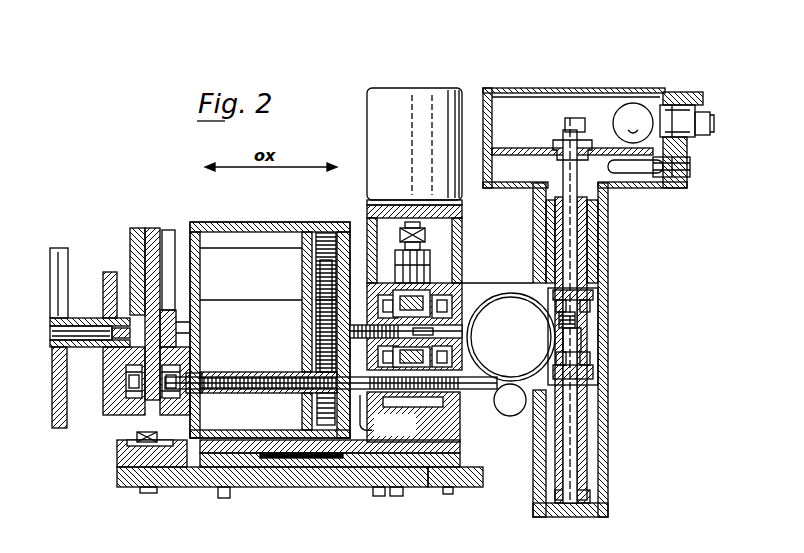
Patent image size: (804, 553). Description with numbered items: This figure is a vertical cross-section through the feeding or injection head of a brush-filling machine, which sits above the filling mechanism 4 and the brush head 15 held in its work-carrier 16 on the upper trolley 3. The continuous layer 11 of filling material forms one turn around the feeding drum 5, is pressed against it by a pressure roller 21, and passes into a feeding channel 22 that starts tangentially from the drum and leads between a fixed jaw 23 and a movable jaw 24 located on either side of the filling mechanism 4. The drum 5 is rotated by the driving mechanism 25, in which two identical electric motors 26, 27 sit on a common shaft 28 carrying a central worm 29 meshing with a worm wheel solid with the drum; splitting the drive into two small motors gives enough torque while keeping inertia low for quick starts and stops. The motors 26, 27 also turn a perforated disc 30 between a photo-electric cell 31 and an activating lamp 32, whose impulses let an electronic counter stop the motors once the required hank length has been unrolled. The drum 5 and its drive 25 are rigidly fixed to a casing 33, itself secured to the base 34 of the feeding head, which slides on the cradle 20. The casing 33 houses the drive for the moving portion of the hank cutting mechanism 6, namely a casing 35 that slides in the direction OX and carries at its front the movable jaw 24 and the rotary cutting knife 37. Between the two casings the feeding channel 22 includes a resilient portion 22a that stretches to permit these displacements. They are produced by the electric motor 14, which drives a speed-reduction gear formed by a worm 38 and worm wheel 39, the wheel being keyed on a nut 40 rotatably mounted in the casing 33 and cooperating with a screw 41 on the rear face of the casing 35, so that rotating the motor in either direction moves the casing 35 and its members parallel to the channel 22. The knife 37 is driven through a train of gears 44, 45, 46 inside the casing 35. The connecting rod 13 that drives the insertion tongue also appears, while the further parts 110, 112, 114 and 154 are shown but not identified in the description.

The upper trolley 3 is at (177, 477).
The filling mechanism 4 is at (171, 233).
The feeding drum 5 is at (507, 312).
The hank cutting mechanism 6 is at (270, 222).
The continuous layer of filling material 11 is at (485, 372).
The connecting rod 13 is at (57, 260).
The driving motor 14 is at (417, 108).
The brush head 15 is at (127, 457).
The work-carrier 16 is at (148, 460).
The cradle 20 is at (427, 492).
The pressure roller 21 is at (507, 405).
The feeding channel 22 is at (262, 372).
The resilient portion 22a is at (410, 417).
The fixed jaw 23 is at (124, 398).
The movable jaw 24 is at (174, 398).
The drum driving mechanism 25 is at (587, 247).
The electric motor 26 is at (578, 423).
The electric motor 27 is at (582, 223).
The common shaft 28 is at (593, 270).
The worm 29 is at (590, 337).
The disc 30 is at (525, 150).
The photo-electric cell 31 is at (630, 172).
The activating lamp 32 is at (632, 117).
The casing 33 is at (370, 245).
The base 34 is at (460, 447).
The sliding casing 35 is at (220, 222).
The rotary cutting knife 37 is at (178, 347).
The worm 38 is at (428, 258).
The worm wheel 39 is at (433, 270).
The nut 40 is at (462, 337).
The screw 41 is at (312, 353).
The gear 44 is at (317, 413).
The gear 45 is at (315, 262).
The gear 46 is at (312, 320).
The nut 110 is at (100, 348).
The bushing 112 is at (172, 300).
The rod 114 is at (82, 348).
The feet 154 is at (228, 497).